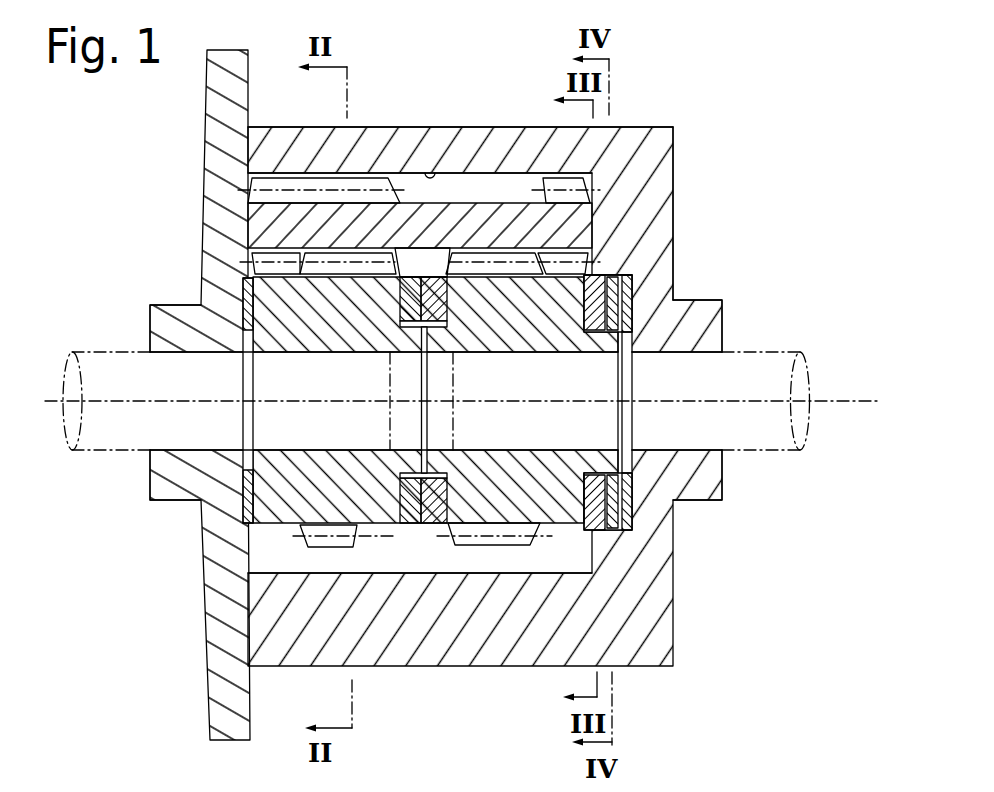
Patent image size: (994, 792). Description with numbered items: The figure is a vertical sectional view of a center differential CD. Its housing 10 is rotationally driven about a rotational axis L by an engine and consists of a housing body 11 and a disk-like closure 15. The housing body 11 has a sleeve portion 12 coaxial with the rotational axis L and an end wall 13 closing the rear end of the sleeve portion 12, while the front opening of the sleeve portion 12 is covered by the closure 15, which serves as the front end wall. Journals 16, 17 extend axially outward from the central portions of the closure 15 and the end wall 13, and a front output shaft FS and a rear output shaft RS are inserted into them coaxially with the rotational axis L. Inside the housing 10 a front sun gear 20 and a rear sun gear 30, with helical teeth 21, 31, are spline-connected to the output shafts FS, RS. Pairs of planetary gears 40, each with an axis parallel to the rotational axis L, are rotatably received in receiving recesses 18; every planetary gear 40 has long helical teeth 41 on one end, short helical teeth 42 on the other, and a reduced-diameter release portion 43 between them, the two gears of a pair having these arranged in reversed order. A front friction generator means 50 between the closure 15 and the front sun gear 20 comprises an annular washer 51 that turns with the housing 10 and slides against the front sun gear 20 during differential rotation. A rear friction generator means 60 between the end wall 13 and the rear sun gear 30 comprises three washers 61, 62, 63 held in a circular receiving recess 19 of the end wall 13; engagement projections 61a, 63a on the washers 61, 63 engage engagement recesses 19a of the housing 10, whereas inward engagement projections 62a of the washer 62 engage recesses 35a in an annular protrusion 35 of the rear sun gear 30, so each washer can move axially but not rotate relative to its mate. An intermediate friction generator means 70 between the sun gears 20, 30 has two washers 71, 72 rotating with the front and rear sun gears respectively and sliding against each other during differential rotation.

The housing 10 is at (414, 118).
The housing body 11 is at (366, 118).
The sleeve portion 12 is at (394, 127).
The end wall 13 is at (673, 202).
The closure 15 is at (206, 137).
The journal 16 is at (165, 304).
The journal 17 is at (705, 299).
The receiving recess 18 is at (431, 172).
The receiving recess 19 is at (613, 274).
The engagement recess 19a is at (610, 531).
The front sun gear 20 is at (278, 538).
The helical teeth 21 is at (355, 548).
The rear sun gear 30 is at (563, 540).
The helical teeth 31 is at (489, 546).
The annular protrusion 35 is at (620, 455).
The recess 35a is at (570, 478).
The planetary gear 40 is at (461, 196).
The long helical teeth 41 is at (293, 178).
The short helical teeth 42 is at (563, 177).
The release portion 43 is at (485, 204).
The front friction generator means 50 is at (233, 285).
The annular washer 51 is at (240, 283).
The rear friction generator means 60 is at (605, 265).
The washer 61 is at (600, 298).
The engagement projection 61a is at (600, 531).
The washer 62 is at (617, 292).
The engagement projection 62a is at (634, 480).
The washer 63 is at (636, 320).
The engagement projection 63a is at (635, 529).
The intermediate friction generator means 70 is at (423, 537).
The washer 71 is at (408, 516).
The washer 72 is at (437, 516).
The front output shaft FS is at (98, 351).
The rear output shaft RS is at (780, 349).
The rotational axis L is at (810, 401).
The center differential CD is at (712, 118).